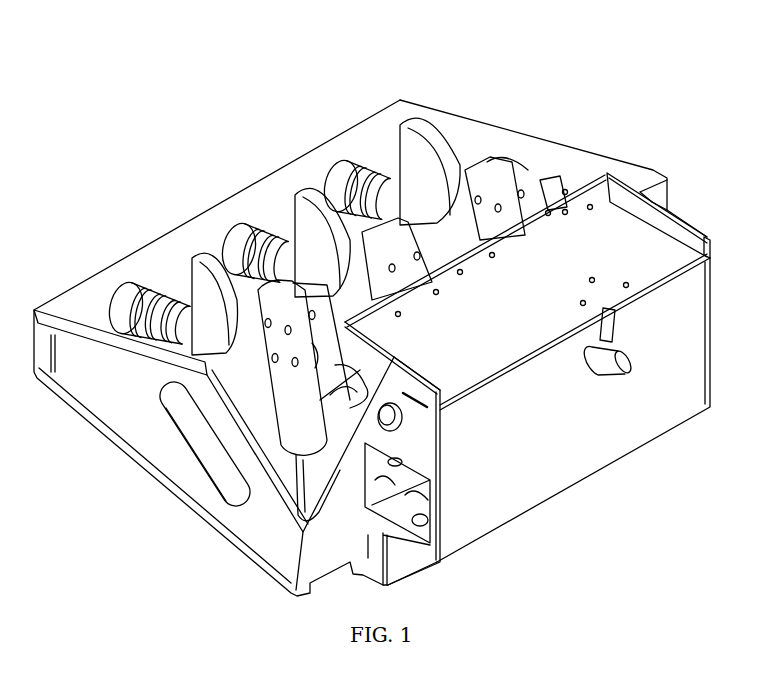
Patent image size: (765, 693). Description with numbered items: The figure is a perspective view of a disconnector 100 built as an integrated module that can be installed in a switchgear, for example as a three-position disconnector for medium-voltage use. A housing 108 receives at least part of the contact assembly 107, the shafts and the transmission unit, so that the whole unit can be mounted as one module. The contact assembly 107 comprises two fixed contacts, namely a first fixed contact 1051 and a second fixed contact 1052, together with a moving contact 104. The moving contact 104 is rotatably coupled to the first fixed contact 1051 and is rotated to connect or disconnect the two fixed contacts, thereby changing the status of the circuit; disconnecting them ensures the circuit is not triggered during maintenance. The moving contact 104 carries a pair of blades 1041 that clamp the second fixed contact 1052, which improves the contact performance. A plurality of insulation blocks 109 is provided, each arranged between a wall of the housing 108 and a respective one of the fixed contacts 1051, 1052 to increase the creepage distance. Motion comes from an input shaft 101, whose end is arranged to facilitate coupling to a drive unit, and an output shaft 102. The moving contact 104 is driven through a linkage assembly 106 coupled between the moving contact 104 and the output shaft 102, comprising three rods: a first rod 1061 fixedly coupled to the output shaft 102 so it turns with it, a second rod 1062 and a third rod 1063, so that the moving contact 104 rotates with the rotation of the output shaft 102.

The disconnector 100 is at (319, 24).
The input shaft 101 is at (630, 362).
The output shaft 102 is at (387, 420).
The moving contact 104 is at (271, 392).
The linkage assembly 106 is at (364, 368).
The contact assembly 107 is at (495, 153).
The housing 108 is at (568, 152).
The insulation block 109 is at (325, 195).
The pair of blades 1041 is at (520, 208).
The first fixed contact 1051 is at (310, 483).
The second fixed contact 1052 is at (410, 160).
The first rod 1061 is at (402, 463).
The second rod 1062 is at (357, 392).
The third rod 1063 is at (312, 343).